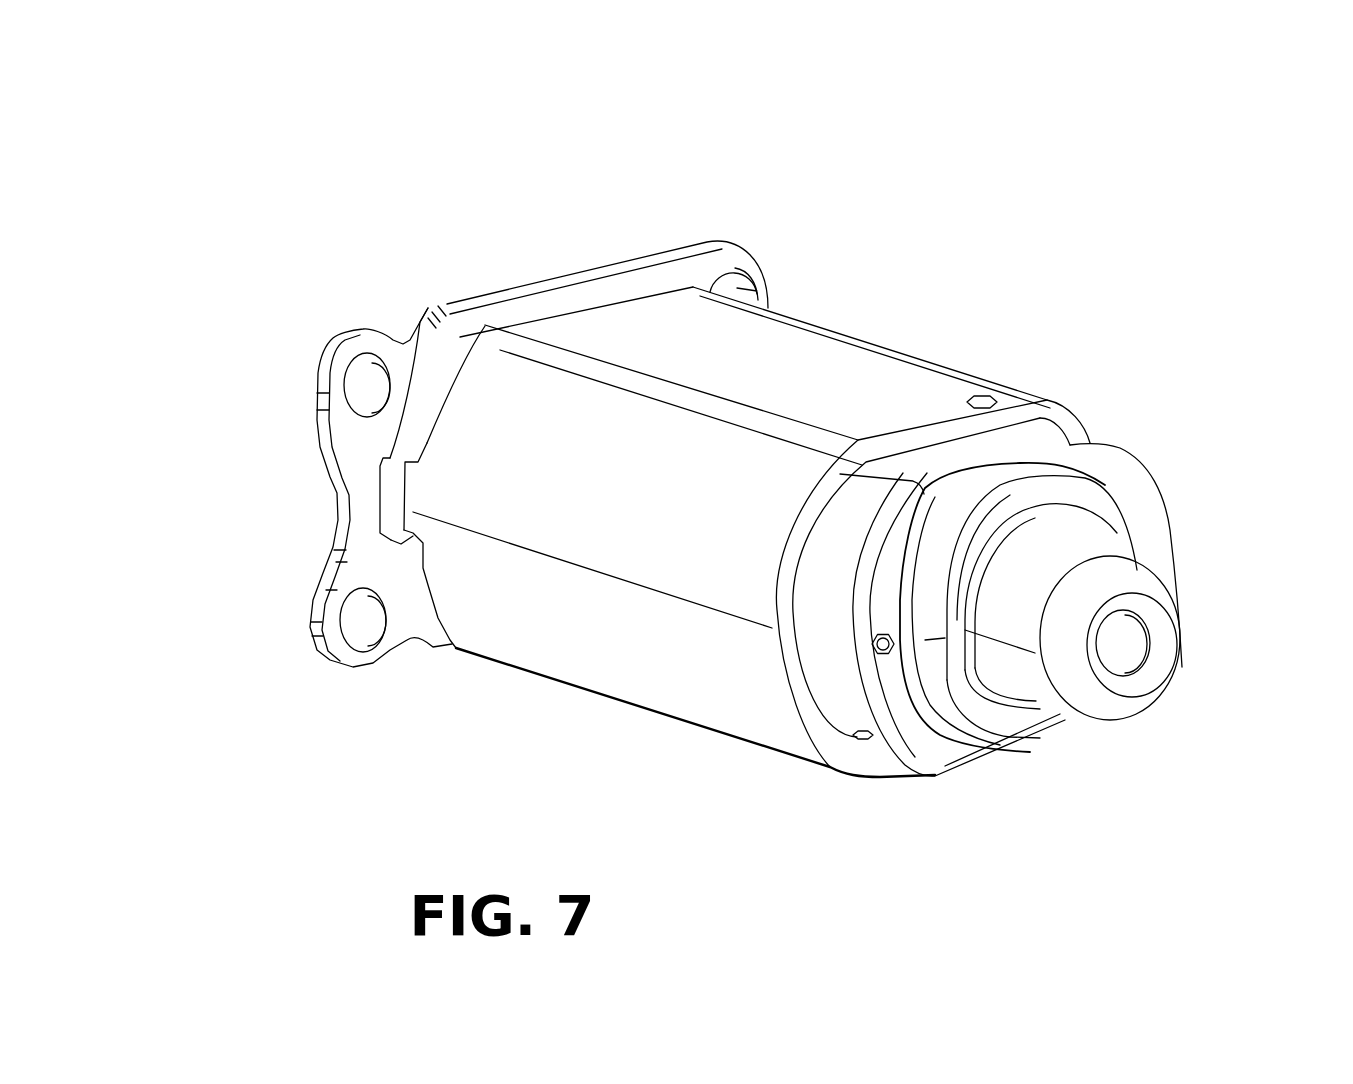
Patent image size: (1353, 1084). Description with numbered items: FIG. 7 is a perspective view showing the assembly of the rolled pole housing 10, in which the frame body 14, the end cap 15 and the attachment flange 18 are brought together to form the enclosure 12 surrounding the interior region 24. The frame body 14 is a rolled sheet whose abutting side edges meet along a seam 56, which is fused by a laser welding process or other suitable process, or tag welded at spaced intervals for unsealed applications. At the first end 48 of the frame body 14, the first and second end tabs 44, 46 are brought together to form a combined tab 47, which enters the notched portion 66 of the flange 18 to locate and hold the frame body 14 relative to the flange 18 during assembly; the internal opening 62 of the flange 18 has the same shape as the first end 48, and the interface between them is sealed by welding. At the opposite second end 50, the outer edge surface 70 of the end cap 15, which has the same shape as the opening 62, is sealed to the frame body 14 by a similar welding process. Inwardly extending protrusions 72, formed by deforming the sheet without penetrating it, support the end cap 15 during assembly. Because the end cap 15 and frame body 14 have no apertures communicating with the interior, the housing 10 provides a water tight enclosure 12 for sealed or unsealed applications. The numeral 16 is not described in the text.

The rolled pole housing 10 is at (1034, 237).
The enclosure 12 is at (841, 309).
The frame body 14 is at (582, 650).
The end cap 15 is at (1172, 511).
The output shaft opening 16 is at (1166, 668).
The attachment flange 18 is at (304, 410).
The interior region 24 is at (831, 541).
The first end tab 44 is at (427, 493).
The second end tab 46 is at (419, 531).
The combined tab 47 is at (396, 517).
The first end 48 is at (473, 366).
The second end 50 is at (783, 667).
The seam 56 is at (691, 578).
The internal opening 62 is at (433, 363).
The notched portion 66 is at (381, 507).
The outer edge surface 70 is at (1087, 447).
The protrusions 72 is at (985, 395).